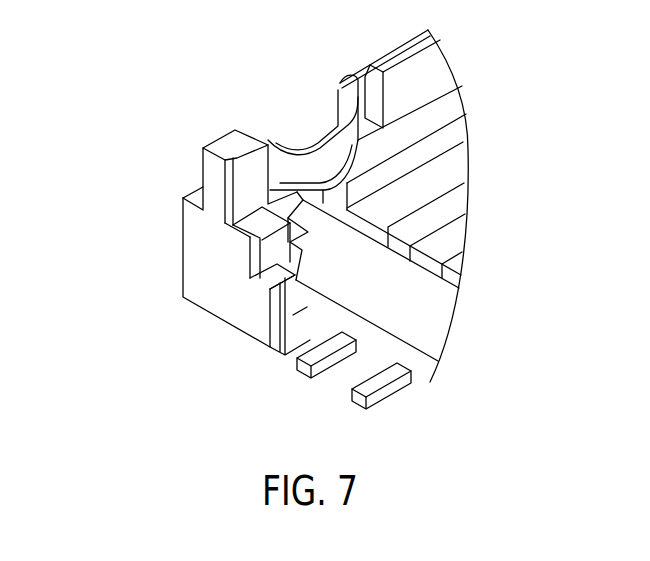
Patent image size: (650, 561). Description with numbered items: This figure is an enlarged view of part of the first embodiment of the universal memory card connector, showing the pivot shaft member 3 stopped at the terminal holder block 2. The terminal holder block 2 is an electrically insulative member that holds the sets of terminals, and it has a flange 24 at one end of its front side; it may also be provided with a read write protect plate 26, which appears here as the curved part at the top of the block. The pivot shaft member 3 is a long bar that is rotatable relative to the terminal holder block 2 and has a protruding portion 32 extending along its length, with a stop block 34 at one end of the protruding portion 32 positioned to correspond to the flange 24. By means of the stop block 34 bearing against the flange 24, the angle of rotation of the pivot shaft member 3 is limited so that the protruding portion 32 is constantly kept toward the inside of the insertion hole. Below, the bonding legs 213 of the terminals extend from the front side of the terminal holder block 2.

The terminal holder block 2 is at (183, 245).
The pivot shaft member 3 is at (322, 318).
The flange 24 is at (267, 218).
The read write protect plate 26 is at (312, 160).
The protruding portion 32 is at (447, 313).
The stop block 34 is at (293, 205).
The bonding legs 213 is at (378, 382).